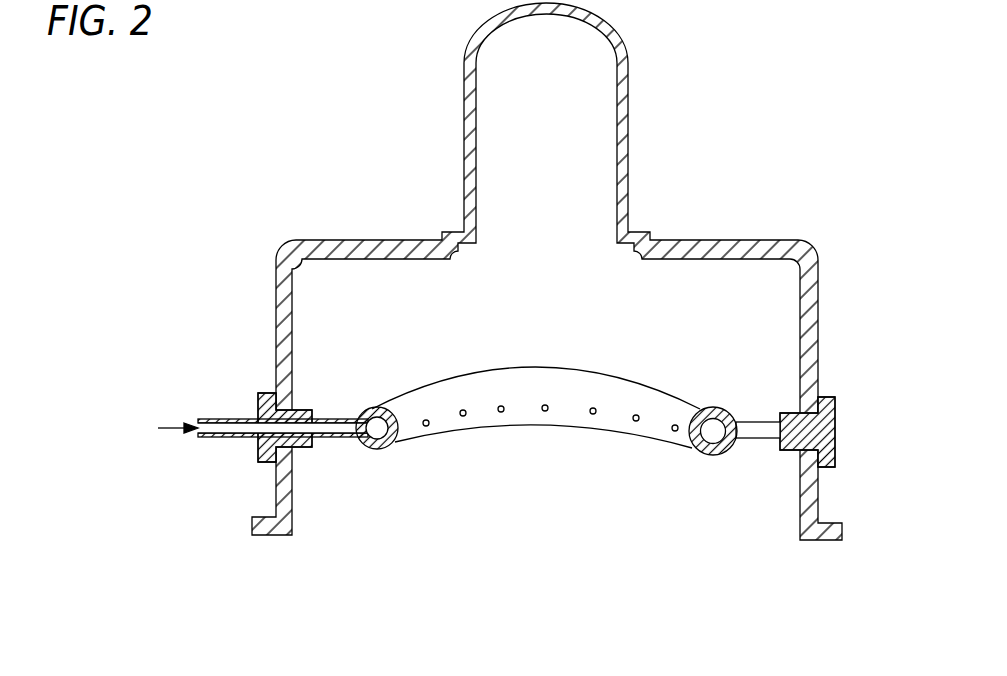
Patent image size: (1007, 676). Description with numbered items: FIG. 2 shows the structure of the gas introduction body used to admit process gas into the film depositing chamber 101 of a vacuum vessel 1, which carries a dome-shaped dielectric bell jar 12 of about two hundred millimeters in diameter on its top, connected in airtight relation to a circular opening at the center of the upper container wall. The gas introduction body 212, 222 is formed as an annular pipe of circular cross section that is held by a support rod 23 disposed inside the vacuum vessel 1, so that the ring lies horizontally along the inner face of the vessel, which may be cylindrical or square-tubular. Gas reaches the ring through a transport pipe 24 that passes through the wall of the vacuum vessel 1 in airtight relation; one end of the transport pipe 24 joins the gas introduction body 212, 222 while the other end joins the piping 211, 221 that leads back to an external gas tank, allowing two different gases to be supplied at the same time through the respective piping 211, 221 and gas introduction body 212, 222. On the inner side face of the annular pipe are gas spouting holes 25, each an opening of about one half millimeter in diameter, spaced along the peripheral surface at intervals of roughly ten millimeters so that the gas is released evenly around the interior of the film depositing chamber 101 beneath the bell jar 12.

The vacuum vessel 1 is at (584, 271).
The bell jar 12 is at (629, 90).
The film depositing chamber 101 is at (584, 271).
The piping 211 is at (252, 384).
The piping 221 is at (223, 418).
The gas introduction body 212 is at (546, 399).
The gas introduction body 222 is at (546, 399).
The support rod 23 is at (760, 422).
The transport pipe 24 is at (340, 432).
The gas spouting holes 25 is at (428, 426).